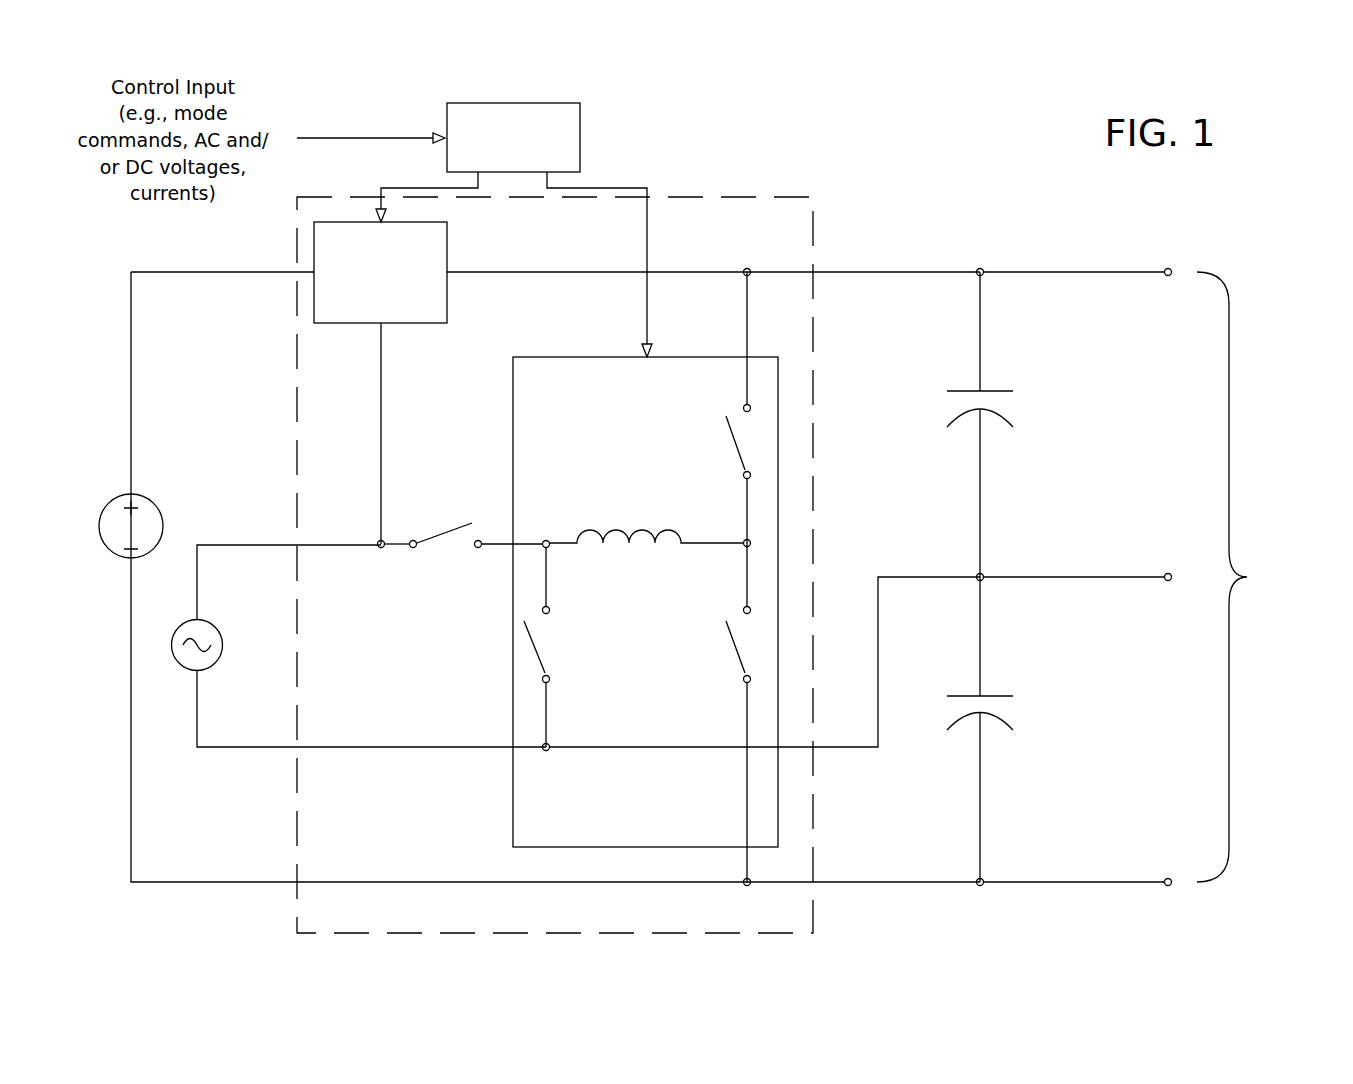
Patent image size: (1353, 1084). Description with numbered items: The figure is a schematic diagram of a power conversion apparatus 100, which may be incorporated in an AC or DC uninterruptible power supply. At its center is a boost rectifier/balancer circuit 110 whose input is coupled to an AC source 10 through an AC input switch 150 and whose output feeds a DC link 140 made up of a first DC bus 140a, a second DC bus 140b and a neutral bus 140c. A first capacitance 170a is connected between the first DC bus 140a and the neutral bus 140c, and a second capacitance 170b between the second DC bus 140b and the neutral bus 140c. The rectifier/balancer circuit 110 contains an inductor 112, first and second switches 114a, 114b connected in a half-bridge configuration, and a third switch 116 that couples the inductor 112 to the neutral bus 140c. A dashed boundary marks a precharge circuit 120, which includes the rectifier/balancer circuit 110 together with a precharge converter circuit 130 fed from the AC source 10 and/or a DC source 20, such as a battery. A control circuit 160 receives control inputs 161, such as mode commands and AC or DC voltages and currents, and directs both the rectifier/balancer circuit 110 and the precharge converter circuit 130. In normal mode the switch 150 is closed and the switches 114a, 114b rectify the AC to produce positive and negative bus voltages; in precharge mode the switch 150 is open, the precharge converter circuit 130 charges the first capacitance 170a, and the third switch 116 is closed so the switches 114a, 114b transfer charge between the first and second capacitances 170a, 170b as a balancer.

The power conversion apparatus 100 is at (902, 156).
The AC source 10 is at (215, 660).
The DC source 20 is at (163, 528).
The boost rectifier/balancer circuit 110 is at (645, 847).
The inductor 112 is at (623, 515).
The first switch 114a is at (707, 433).
The second switch 114b is at (715, 636).
The third switch 116 is at (567, 657).
The precharge circuit 120 is at (813, 563).
The precharge converter circuit 130 is at (426, 323).
The DC link 140 is at (1258, 577).
The first DC bus 140a is at (1050, 272).
The second DC bus 140b is at (1045, 880).
The neutral bus 140c is at (993, 575).
The AC input switch 150 is at (432, 566).
The control circuit 160 is at (560, 103).
The control inputs 161 is at (363, 137).
The first capacitance 170a is at (1046, 414).
The second capacitance 170b is at (1037, 720).